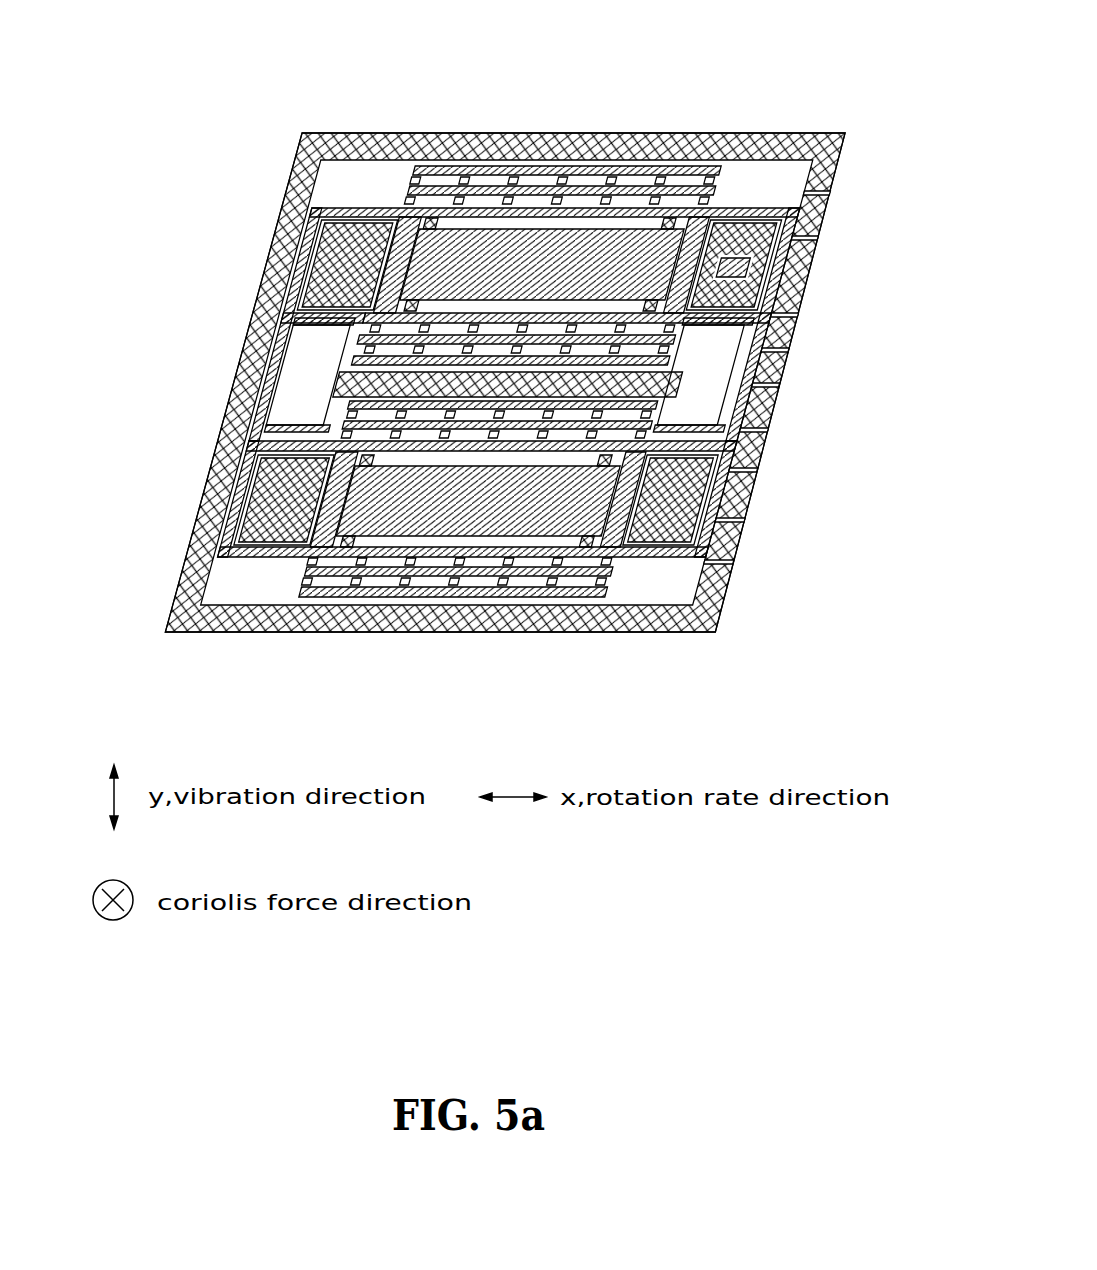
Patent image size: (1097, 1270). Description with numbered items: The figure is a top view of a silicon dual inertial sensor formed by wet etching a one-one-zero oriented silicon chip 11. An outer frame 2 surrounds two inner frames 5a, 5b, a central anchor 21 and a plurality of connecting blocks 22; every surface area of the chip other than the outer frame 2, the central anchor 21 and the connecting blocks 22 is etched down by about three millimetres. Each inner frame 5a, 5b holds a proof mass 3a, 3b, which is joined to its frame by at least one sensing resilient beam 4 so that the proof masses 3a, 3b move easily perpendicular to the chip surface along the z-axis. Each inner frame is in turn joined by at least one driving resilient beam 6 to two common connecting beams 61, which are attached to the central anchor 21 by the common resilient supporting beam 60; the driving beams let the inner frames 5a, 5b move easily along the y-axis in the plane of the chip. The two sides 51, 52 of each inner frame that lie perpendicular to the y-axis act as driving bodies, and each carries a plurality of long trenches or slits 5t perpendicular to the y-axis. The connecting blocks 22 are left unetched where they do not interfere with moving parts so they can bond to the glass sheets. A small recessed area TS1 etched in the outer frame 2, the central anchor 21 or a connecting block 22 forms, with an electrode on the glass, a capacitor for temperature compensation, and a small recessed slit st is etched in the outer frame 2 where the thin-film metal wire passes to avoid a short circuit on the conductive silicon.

The outer frame 2 is at (297, 205).
The (110) silicon chip 11 is at (273, 263).
The proof mass 3a is at (453, 238).
The proof mass 3b is at (345, 548).
The sensing resilient beam 4 is at (712, 212).
The inner frame 5a is at (395, 247).
The inner frame 5b is at (232, 543).
The long trenches or slits 5t is at (432, 583).
The driving resilient beam 6 is at (678, 557).
The central anchor 21 is at (347, 370).
The connecting block 22 is at (687, 523).
The side of inner frame (driving body) 51 is at (573, 593).
The side of inner frame (driving body) 52 is at (383, 323).
The common resilient supporting beam 60 is at (707, 428).
The common connecting beam 61 is at (710, 493).
The recessed slit st is at (777, 400).
The recessed area TS1 is at (747, 263).